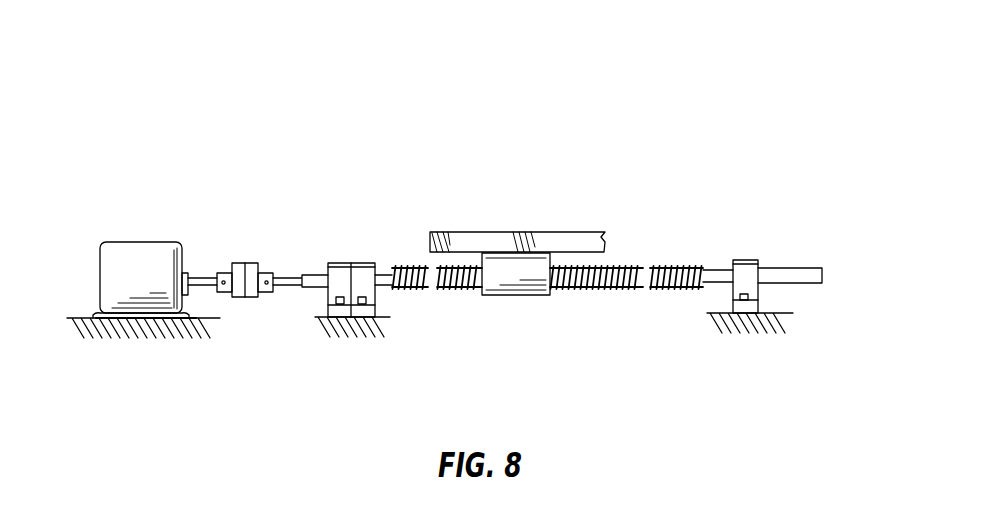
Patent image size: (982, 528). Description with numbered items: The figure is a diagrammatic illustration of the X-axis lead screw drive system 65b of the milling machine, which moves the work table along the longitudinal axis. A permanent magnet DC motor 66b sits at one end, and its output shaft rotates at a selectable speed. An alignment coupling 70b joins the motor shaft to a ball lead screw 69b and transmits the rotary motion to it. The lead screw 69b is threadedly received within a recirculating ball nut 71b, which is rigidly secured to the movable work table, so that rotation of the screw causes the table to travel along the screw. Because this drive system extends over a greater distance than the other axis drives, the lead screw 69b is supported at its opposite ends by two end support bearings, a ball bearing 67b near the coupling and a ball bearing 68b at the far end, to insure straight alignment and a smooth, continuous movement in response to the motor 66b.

The ball lead screw and recirculating ball nut drive system 65b is at (620, 210).
The motor 66b is at (138, 255).
The ball bearing 67b is at (345, 265).
The ball bearing 68b is at (742, 260).
The ball lead screw 69b is at (455, 291).
The alignment coupling 70b is at (252, 297).
The recirculating ball nut 71b is at (523, 286).